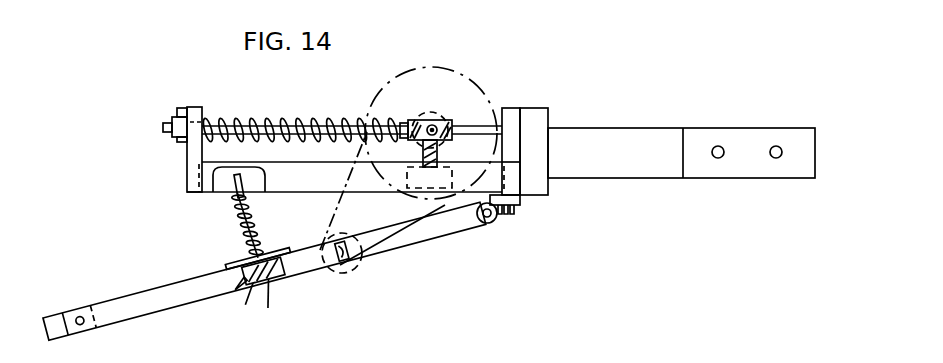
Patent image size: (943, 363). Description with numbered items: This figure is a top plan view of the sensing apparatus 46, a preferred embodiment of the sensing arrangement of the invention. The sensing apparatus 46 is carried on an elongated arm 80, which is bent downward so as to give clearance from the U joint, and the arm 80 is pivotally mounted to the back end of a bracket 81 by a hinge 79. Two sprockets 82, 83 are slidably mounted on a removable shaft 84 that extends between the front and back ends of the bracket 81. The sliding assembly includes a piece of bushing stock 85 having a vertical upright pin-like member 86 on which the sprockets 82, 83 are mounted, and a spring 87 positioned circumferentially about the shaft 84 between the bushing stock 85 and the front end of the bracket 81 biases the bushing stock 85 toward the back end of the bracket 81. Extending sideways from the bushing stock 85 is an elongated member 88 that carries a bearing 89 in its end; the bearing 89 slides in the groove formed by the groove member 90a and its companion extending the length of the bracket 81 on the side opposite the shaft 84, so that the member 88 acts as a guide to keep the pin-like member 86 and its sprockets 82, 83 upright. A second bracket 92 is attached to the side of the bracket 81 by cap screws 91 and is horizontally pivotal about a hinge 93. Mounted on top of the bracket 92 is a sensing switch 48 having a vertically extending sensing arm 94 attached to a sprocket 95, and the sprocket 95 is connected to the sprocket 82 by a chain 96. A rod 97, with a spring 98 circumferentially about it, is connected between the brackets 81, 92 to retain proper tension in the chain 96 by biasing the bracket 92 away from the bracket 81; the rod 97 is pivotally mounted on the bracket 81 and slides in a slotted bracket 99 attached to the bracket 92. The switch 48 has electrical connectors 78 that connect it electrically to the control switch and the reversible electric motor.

The sensing apparatus 46 is at (545, 255).
The sensing switch 48 is at (312, 260).
The electrical connectors 78 is at (268, 303).
The hinge 79 is at (537, 195).
The elongated arm 80 is at (599, 128).
The bracket 81 is at (195, 152).
The sprocket 82 is at (452, 78).
The sprocket 83 is at (435, 117).
The removable shaft 84 is at (237, 117).
The bushing stock 85 is at (417, 122).
The pin-like member 86 is at (440, 128).
The spring 87 is at (278, 120).
The elongated member 88 is at (438, 162).
The bearing 89 is at (408, 193).
The groove member 90a is at (319, 183).
The cap screws 91 is at (512, 208).
The bracket 92 is at (48, 317).
The hinge 93 is at (487, 223).
The sensing arm 94 is at (348, 226).
The sprocket 95 is at (352, 272).
The chain 96 is at (332, 220).
The rod 97 is at (248, 182).
The spring 98 is at (243, 231).
The slotted bracket 99 is at (230, 267).